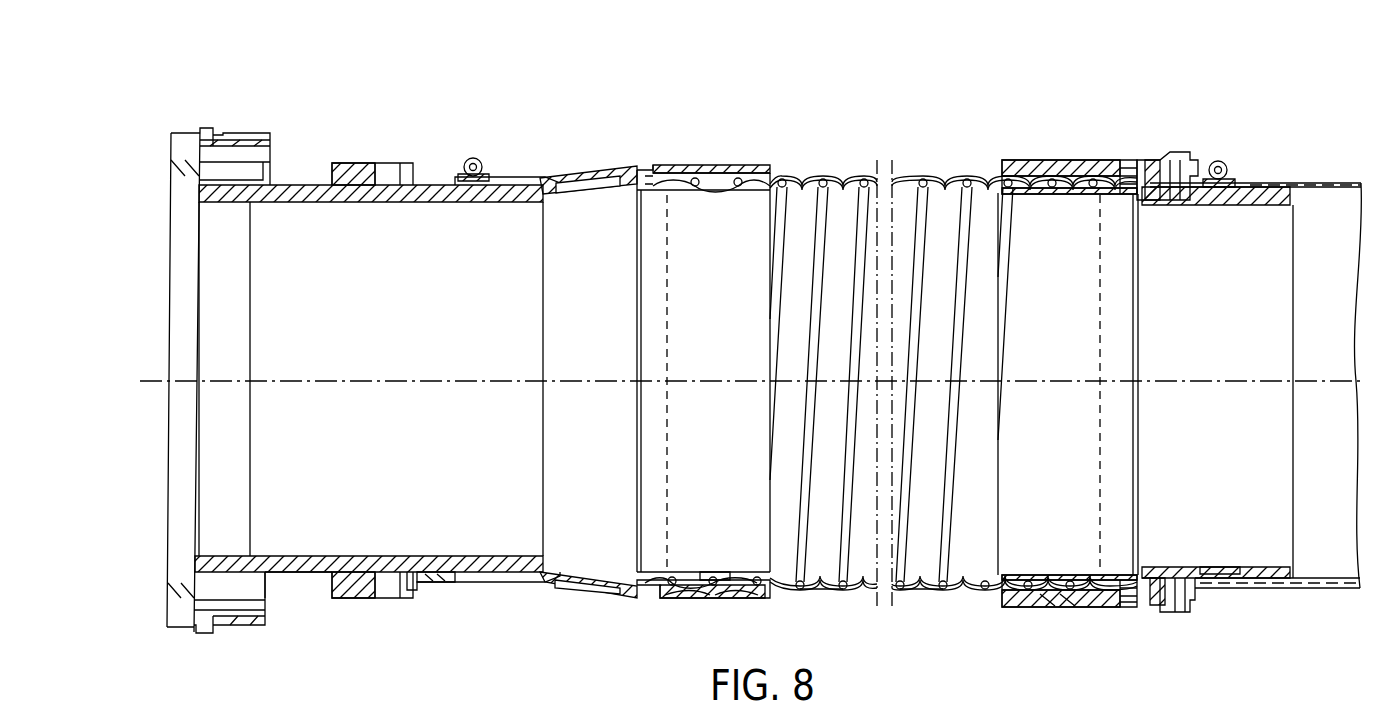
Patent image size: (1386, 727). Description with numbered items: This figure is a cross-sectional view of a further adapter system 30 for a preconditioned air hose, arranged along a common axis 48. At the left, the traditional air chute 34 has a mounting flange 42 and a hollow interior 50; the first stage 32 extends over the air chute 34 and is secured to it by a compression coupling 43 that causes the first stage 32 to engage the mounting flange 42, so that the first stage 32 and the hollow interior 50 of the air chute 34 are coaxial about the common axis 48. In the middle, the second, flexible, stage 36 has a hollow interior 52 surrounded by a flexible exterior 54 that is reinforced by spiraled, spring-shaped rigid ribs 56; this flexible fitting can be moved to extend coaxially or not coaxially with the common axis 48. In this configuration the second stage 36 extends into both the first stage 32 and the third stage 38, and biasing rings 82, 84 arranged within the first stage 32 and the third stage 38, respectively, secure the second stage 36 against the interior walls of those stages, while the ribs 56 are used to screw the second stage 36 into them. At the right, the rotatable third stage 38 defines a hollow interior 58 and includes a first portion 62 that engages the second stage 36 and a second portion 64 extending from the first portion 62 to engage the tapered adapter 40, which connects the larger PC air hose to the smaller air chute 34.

The adapter system 30 is at (1167, 72).
The first stage 32 is at (637, 135).
The air chute 34 is at (378, 134).
The second stage 36 is at (884, 132).
The third stage 38 is at (1178, 135).
The tapered adapter 40 is at (1334, 590).
The mounting flange 42 is at (423, 577).
The compression coupling 43 is at (477, 158).
The common axis 48 is at (373, 381).
The hollow interior 50 is at (306, 540).
The hollow interior 52 is at (921, 566).
The flexible exterior 54 is at (818, 591).
The rigid ribs 56 is at (814, 192).
The hollow interior 58 is at (1265, 290).
The first portion 62 is at (1083, 609).
The second portion 64 is at (1216, 565).
The biasing ring 82 is at (712, 572).
The biasing ring 84 is at (1037, 575).